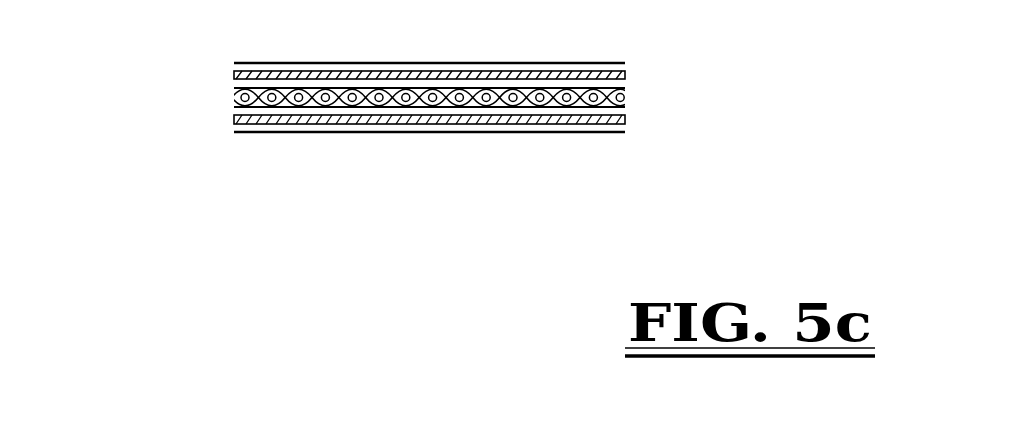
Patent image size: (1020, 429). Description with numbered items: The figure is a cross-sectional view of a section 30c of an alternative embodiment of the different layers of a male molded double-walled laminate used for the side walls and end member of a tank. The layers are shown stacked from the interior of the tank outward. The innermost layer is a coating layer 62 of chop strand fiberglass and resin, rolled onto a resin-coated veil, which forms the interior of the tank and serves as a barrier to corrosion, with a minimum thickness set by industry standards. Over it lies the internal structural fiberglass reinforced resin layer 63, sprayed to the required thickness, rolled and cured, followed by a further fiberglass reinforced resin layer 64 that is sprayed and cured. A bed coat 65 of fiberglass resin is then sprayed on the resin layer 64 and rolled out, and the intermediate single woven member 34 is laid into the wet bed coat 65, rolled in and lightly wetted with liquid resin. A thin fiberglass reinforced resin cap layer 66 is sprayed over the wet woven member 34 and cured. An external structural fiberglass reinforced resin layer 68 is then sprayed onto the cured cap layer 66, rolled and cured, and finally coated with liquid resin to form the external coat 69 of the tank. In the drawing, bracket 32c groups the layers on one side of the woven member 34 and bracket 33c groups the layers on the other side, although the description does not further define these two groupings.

The section 30c is at (136, 90).
The upper layer assembly 32c is at (756, 2).
The lower layer assembly 33c is at (756, 93).
The coating layer 62 is at (627, 66).
The internal structural fiberglass reinforced resin layer 63 is at (626, 77).
The fiberglass reinforced resin layer 64 is at (627, 86).
The bed coat 65 is at (233, 93).
The intermediate single woven member 34 is at (233, 100).
The fiberglass reinforced resin cap layer 66 is at (627, 112).
The external structural fiberglass reinforced resin layer 68 is at (627, 121).
The external coat 69 is at (626, 131).